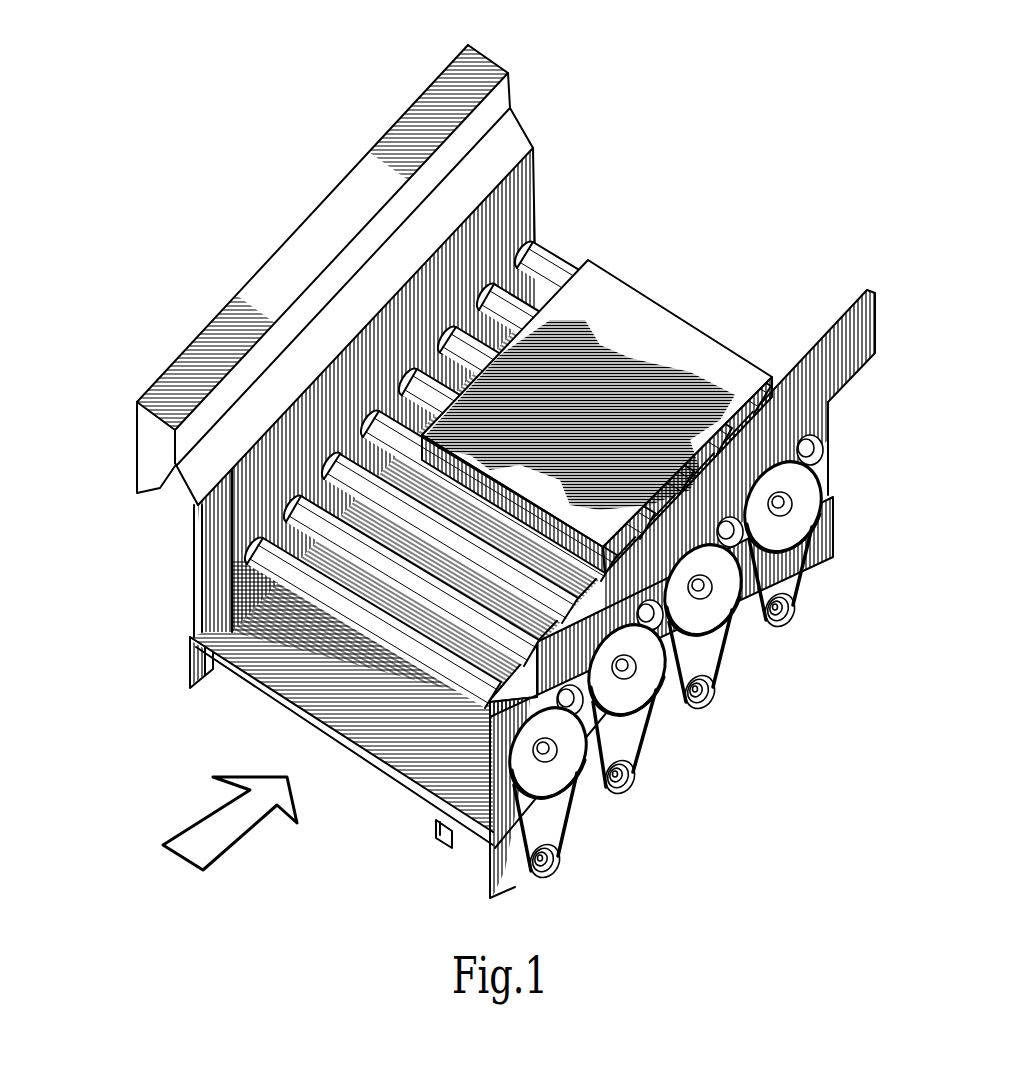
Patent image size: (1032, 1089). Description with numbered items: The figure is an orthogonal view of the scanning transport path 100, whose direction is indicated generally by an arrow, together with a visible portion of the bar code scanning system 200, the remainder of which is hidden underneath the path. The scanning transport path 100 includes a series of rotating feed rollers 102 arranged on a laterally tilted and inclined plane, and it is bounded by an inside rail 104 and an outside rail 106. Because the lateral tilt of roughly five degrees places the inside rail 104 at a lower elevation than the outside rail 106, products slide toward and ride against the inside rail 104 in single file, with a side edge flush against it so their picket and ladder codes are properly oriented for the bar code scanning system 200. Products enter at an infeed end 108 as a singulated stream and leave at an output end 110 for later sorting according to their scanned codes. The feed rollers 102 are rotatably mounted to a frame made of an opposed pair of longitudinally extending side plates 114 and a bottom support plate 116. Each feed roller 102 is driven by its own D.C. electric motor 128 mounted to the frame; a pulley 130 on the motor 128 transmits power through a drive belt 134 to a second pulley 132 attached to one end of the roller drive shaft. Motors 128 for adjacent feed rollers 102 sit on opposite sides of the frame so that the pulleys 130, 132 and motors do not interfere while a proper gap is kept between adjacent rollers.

The scanning transport path 100 is at (222, 840).
The feed rollers 102 is at (540, 258).
The inside rail 104 is at (383, 683).
The outside rail 106 is at (197, 563).
The infeed end 108 is at (313, 657).
The output end 110 is at (560, 262).
The side plates 114 is at (195, 593).
The bottom support plate 116 is at (423, 800).
The D.C. electric motor 128 is at (450, 837).
The pulley 130 is at (790, 620).
The second pulley 132 is at (807, 483).
The drive belt 134 is at (810, 573).
The bar code scanning system 200 is at (665, 343).